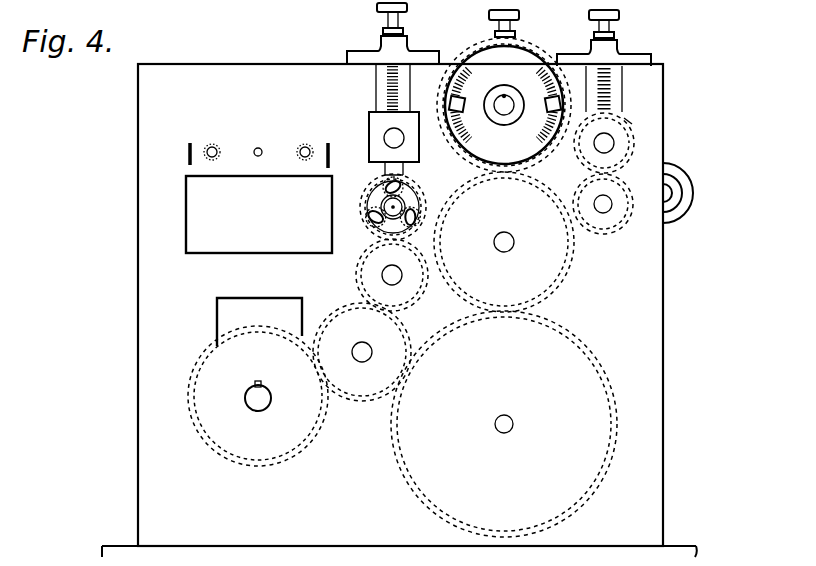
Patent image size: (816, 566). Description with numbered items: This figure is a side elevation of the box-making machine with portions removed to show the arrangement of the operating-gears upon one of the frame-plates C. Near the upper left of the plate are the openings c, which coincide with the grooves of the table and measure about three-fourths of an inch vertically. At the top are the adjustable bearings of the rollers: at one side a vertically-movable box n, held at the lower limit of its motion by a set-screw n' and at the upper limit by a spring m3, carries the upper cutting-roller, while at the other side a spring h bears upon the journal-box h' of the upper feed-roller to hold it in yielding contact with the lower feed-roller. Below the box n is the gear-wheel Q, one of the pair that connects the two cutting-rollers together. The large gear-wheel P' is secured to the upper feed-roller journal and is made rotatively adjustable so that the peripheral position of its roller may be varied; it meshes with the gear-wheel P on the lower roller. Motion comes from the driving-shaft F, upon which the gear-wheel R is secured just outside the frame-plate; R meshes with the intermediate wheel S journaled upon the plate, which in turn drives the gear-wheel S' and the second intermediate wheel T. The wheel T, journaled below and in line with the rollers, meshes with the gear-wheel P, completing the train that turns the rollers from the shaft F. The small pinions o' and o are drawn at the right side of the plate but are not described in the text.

The frame-plate C is at (399, 310).
The opening c is at (191, 147).
The set-screw n' is at (393, 57).
The vertically-movable box n is at (381, 137).
The spring m3 is at (386, 170).
The gear-wheel Q is at (362, 208).
The gear-wheel P' is at (504, 91).
The gear-wheel P is at (504, 242).
The second intermediate wheel T is at (504, 424).
The gear-wheel S' is at (392, 275).
The intermediate wheel S is at (362, 352).
The gear-wheel R is at (264, 460).
The driving-shaft F is at (267, 408).
The spring h is at (620, 61).
The journal-box h' is at (640, 122).
The upper pinion o' is at (617, 143).
The lower pinion o is at (613, 204).